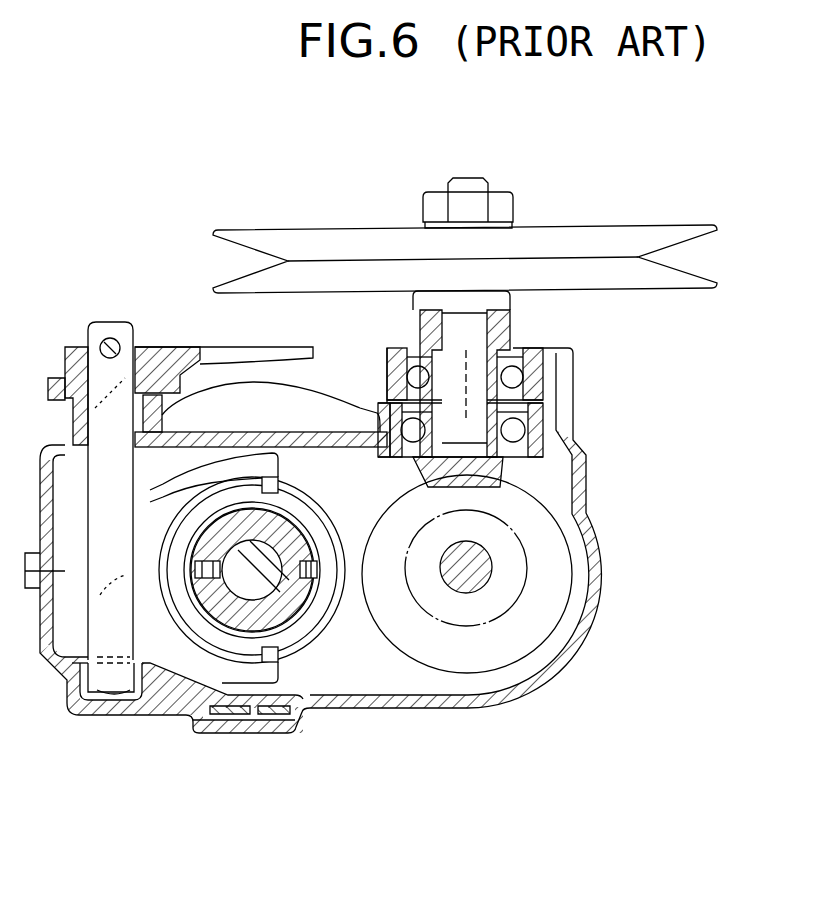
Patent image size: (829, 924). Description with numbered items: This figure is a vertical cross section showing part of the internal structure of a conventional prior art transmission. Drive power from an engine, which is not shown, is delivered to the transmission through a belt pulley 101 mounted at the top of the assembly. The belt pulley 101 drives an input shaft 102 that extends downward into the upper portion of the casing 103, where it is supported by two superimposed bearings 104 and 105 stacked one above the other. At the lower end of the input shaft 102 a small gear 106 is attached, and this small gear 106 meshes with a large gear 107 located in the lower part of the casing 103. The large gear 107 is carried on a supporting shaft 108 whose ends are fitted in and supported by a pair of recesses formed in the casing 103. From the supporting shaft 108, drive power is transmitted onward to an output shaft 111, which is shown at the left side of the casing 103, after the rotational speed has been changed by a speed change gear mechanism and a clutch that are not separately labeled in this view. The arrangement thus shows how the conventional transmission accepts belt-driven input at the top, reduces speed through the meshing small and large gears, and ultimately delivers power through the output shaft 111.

The belt pulley 101 is at (297, 248).
The input shaft 102 is at (517, 328).
The casing 103 is at (363, 697).
The bearing 104 is at (503, 372).
The bearing 105 is at (530, 432).
The small gear 106 is at (500, 480).
The large gear 107 is at (562, 545).
The supporting shaft 108 is at (478, 580).
The output shaft 111 is at (278, 592).